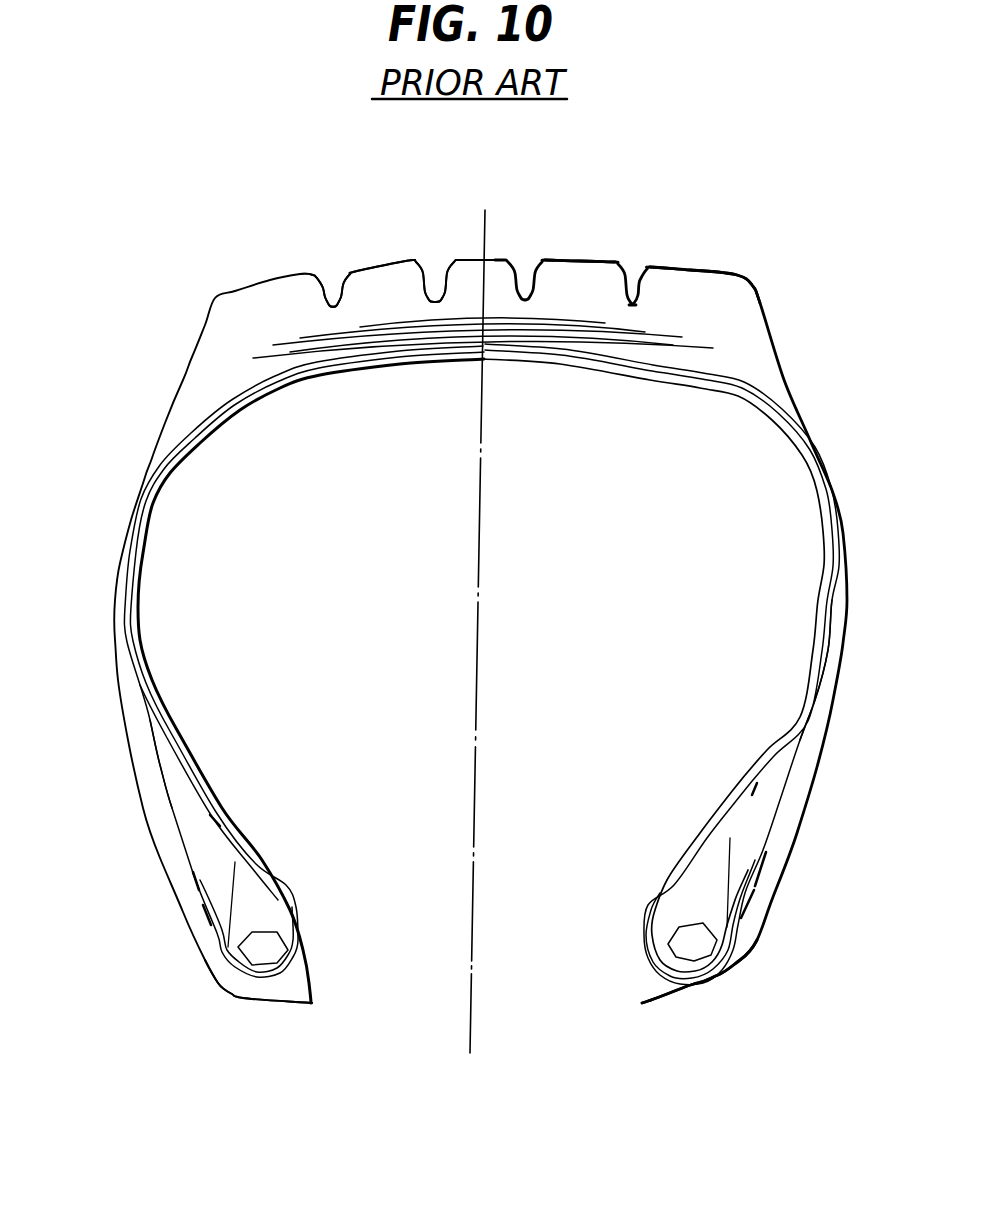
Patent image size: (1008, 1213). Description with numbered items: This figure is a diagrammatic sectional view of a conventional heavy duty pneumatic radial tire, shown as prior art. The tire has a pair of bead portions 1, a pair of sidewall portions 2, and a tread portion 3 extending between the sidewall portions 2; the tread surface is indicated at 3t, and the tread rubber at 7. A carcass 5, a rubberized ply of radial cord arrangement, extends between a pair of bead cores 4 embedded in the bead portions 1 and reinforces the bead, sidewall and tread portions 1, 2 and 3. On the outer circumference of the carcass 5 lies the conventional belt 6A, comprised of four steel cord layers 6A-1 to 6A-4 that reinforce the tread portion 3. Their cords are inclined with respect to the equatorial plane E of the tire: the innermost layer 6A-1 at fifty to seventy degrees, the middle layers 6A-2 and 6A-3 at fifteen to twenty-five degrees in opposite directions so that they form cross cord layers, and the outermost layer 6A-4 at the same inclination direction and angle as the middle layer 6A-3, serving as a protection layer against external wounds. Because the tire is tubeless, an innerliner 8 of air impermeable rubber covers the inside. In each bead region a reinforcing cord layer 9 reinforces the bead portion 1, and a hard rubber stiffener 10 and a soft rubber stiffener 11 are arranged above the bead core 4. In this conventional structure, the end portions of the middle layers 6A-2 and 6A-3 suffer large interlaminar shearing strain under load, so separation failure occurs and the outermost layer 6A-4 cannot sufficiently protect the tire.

The bead portion 1 is at (186, 944).
The sidewall portion 2 is at (110, 545).
The tread portion 3 is at (378, 252).
The tread surface 3t is at (577, 258).
The bead core 4 is at (265, 952).
The carcass 5 is at (133, 592).
The belt 6A is at (458, 308).
The innermost layer 6A-1 is at (313, 353).
The middle layer 6A-2 is at (258, 357).
The middle layer 6A-3 is at (287, 347).
The outermost layer 6A-4 is at (361, 324).
The tread rubber 7 is at (667, 283).
The innerliner 8 is at (172, 743).
The reinforcing cord layer 9 is at (252, 862).
The hard rubber stiffener 10 is at (258, 913).
The soft rubber stiffener 11 is at (202, 838).
The equatorial plane E is at (486, 211).